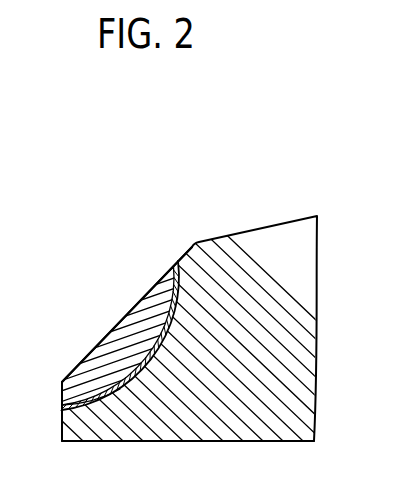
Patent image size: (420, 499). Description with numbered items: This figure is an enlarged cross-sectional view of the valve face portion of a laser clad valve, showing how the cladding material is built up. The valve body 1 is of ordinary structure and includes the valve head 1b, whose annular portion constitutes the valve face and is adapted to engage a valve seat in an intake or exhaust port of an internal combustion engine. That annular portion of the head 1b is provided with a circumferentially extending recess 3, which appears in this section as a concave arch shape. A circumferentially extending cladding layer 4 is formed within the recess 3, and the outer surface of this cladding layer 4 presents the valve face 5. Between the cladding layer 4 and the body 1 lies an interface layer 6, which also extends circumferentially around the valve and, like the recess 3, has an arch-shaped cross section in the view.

The valve body 1 is at (269, 442).
The valve head 1b is at (202, 418).
The recess 3 is at (92, 394).
The cladding layer 4 is at (116, 332).
The valve face 5 is at (128, 298).
The interface layer 6 is at (84, 390).